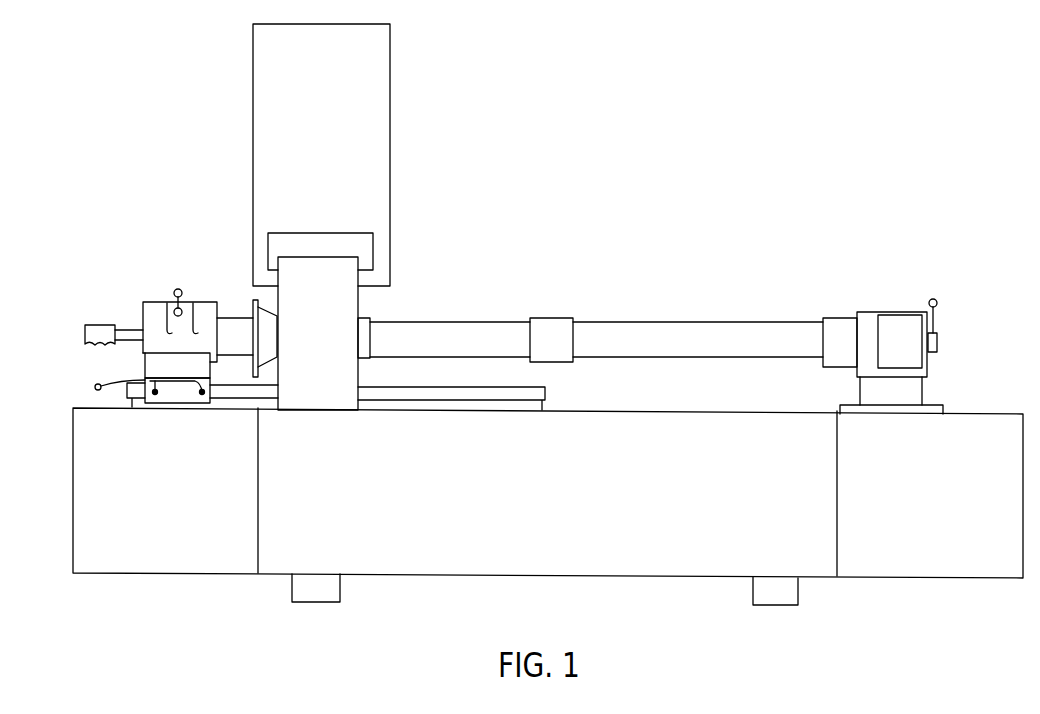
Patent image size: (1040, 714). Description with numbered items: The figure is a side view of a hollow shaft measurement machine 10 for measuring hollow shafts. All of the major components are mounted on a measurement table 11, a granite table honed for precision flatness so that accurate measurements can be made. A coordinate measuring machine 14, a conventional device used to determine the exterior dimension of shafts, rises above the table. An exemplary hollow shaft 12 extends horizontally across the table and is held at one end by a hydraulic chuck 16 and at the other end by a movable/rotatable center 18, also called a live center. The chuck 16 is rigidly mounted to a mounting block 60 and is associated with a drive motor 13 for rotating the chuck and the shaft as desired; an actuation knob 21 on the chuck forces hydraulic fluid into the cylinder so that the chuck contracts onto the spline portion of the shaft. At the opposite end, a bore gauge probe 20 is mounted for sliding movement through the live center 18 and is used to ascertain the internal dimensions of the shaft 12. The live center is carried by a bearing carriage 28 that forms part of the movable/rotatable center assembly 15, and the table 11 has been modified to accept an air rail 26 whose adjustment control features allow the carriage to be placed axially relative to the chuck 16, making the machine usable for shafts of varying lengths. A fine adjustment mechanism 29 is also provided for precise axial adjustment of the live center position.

The hollow shaft measurement machine 10 is at (641, 255).
The measurement table 11 is at (648, 497).
The hollow shaft 12 is at (612, 347).
The drive motor 13 is at (910, 358).
The coordinate measuring machine 14 is at (391, 110).
The movable/rotatable center assembly 15 is at (200, 293).
The hydraulic chuck 16 is at (833, 327).
The movable/rotatable center 18 is at (266, 358).
The bore gauge probe 20 is at (132, 333).
The actuation knob 21 is at (942, 310).
The air rail 26 is at (440, 393).
The bearing carriage 28 is at (158, 364).
The fine adjustment mechanism 29 is at (178, 289).
The mounting block 60 is at (908, 393).